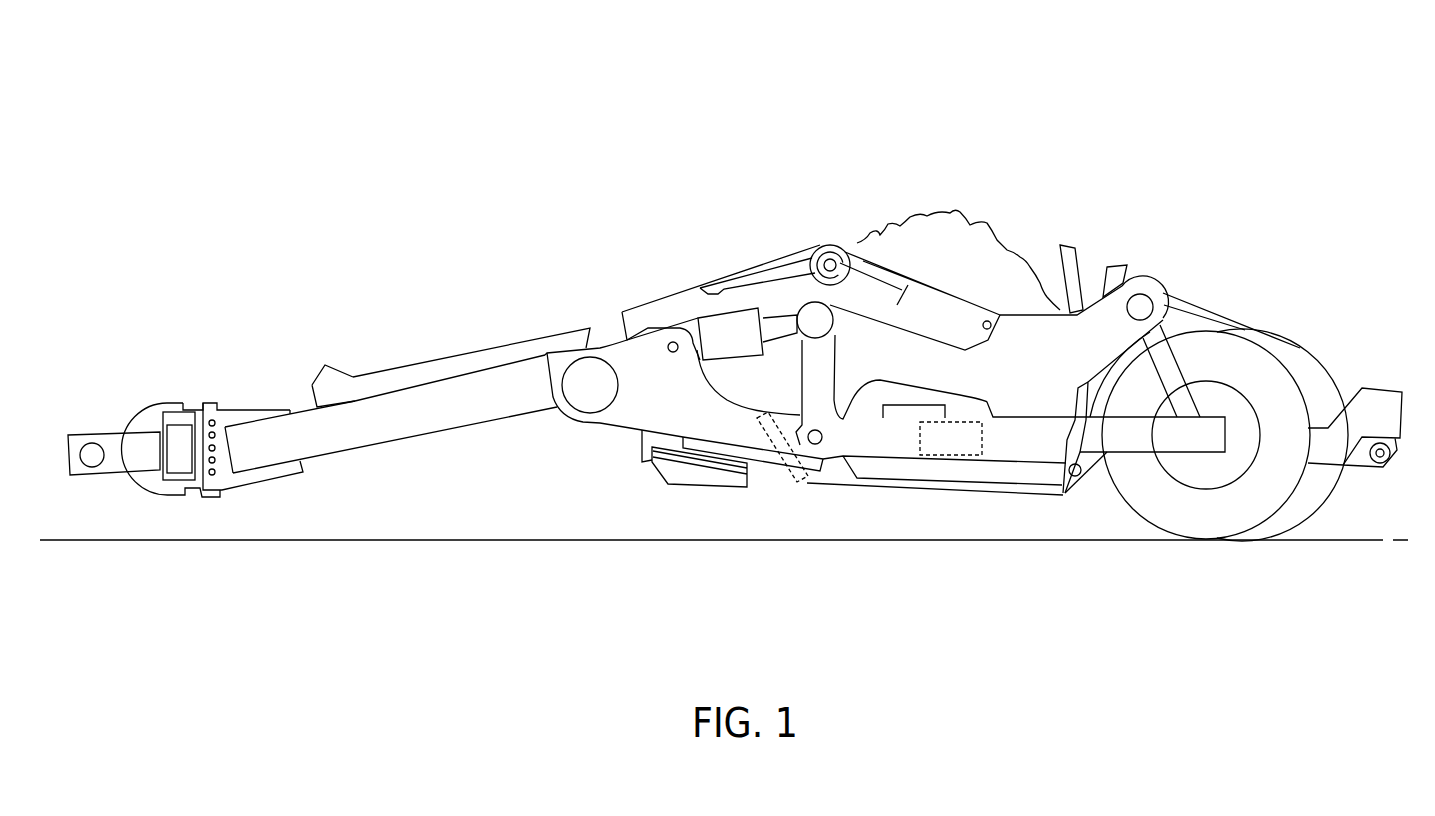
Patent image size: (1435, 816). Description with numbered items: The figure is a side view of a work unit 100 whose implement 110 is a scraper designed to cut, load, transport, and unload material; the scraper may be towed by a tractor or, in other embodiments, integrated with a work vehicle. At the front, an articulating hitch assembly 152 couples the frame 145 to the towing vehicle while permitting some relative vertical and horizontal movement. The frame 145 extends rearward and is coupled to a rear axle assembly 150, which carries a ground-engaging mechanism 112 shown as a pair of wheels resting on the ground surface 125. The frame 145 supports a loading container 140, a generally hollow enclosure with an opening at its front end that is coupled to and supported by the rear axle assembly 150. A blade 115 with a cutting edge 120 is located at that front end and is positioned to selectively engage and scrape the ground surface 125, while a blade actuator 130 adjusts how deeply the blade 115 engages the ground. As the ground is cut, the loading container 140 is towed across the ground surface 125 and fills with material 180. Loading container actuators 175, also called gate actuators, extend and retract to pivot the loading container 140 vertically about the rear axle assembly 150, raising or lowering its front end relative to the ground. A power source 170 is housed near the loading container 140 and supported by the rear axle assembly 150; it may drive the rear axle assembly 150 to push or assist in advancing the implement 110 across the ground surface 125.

The work unit 100 is at (306, 88).
The implement 110 is at (524, 198).
The ground-engaging mechanism 112 is at (1202, 555).
The blade 115 is at (795, 487).
The cutting edge 120 is at (795, 485).
The ground surface 125 is at (724, 568).
The blade actuator 130 is at (737, 335).
The loading container 140 is at (1000, 363).
The frame 145 is at (1197, 268).
The rear axle assembly 150 is at (1245, 392).
The articulating hitch assembly 152 is at (96, 378).
The power source 170 is at (972, 452).
The loading container actuators 175 is at (913, 300).
The material 180 is at (997, 275).